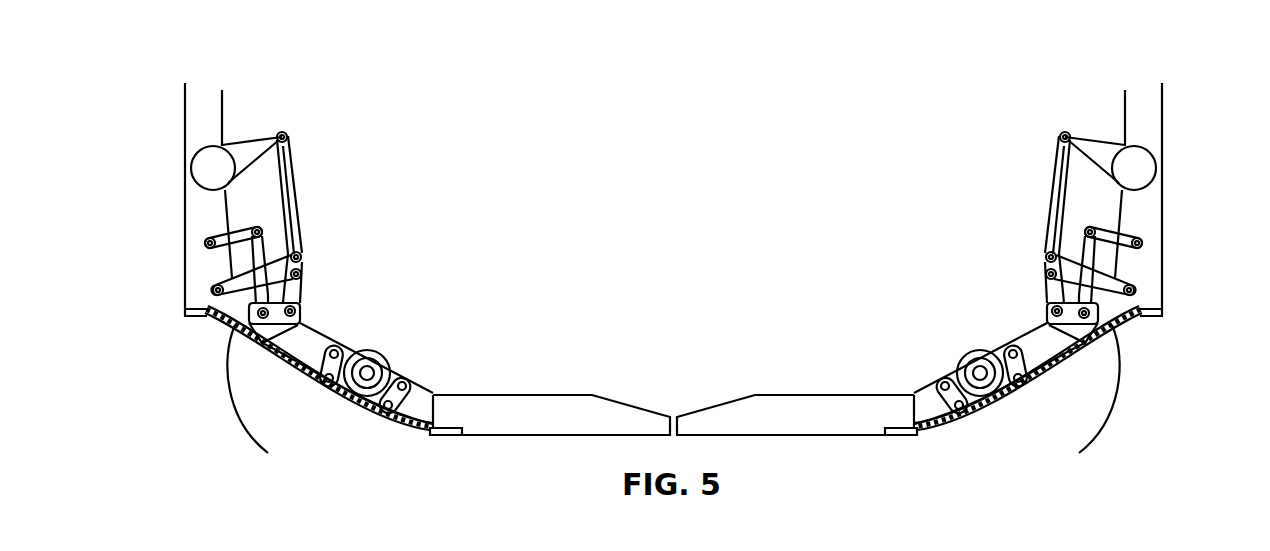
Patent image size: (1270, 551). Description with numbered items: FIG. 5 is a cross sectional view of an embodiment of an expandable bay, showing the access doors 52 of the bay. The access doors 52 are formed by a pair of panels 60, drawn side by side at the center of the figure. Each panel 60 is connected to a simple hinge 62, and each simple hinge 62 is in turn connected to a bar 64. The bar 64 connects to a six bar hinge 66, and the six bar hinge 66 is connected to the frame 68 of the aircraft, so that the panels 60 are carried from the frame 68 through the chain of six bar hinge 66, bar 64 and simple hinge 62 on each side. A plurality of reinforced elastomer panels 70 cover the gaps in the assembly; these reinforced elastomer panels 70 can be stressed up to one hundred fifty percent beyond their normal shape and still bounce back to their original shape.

The access doors 52 is at (693, 73).
The panels 60 is at (775, 395).
The simple hinge 62 is at (375, 345).
The bar 64 is at (322, 335).
The six bar hinge 66 is at (297, 172).
The frame 68 is at (207, 85).
The reinforced elastomer panels 70 is at (394, 424).